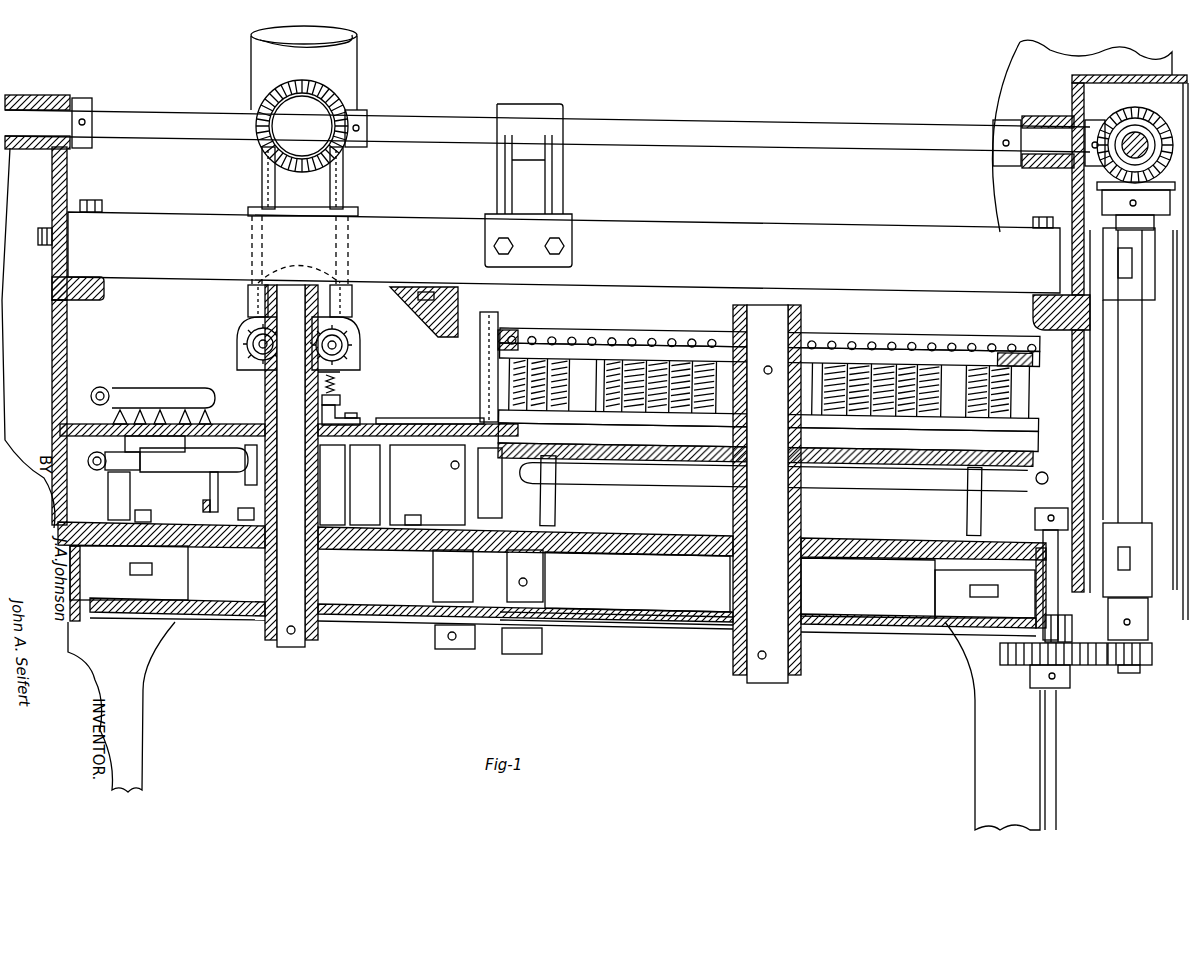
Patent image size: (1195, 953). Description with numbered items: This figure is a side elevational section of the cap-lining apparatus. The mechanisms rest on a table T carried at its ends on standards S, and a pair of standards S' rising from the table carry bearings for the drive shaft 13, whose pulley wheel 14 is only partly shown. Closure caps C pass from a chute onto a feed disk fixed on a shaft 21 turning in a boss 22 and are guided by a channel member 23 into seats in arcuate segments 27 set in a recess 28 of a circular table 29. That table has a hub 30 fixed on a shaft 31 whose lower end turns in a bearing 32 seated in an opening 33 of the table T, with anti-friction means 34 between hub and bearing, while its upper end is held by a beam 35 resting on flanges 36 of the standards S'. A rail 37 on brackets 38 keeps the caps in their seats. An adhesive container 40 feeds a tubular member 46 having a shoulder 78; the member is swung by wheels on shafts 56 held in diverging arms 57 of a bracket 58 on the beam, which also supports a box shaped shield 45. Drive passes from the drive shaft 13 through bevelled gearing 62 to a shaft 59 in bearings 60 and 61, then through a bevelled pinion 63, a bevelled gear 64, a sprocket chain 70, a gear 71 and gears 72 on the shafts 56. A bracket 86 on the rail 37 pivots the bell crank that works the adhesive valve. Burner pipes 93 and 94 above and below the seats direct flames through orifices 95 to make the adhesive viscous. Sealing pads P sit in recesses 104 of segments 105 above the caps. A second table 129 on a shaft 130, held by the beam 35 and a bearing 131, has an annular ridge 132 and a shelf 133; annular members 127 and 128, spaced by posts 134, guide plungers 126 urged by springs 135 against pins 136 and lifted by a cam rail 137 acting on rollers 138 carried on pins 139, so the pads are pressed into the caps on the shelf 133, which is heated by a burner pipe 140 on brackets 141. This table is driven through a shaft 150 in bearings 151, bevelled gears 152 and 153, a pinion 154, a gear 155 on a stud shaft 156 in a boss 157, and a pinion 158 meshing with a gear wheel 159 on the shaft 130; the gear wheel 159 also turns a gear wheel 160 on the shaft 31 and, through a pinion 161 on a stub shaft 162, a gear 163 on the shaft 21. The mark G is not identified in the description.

The drive shaft 13 is at (1070, 180).
The pulley wheel 14 is at (1000, 74).
The shaft 21 is at (450, 652).
The boss 22 is at (440, 572).
The channel member 23 is at (410, 418).
The arcuate segments 27 is at (185, 423).
The recess 28 is at (405, 446).
The circular table 29 is at (224, 423).
The hub 30 is at (268, 400).
The shaft 31 is at (294, 648).
The bearing 32 is at (318, 573).
The opening 33 is at (265, 548).
The anti-friction means 34 is at (255, 478).
The beam 35 is at (158, 225).
The flanges 36 is at (100, 290).
The rail 37 is at (92, 468).
The brackets 38 is at (110, 488).
The container 40 is at (358, 66).
The shield 45 is at (248, 305).
The tubular member 46 is at (332, 378).
The shafts 56 is at (258, 355).
The diverging arms 57 is at (250, 322).
The bracket 58 is at (297, 183).
The shaft 59 is at (620, 128).
The bearings 60 is at (55, 100).
The bearing 61 is at (520, 110).
The bevelled gearing 62 is at (1110, 122).
The bevelled pinion 63 is at (362, 112).
The bevelled gear 64 is at (262, 100).
The sprocket chain 70 is at (336, 182).
The gear 71 is at (250, 295).
The gears 72 is at (247, 345).
The shoulder 78 is at (340, 397).
The bracket 86 is at (340, 402).
The pipe 93 is at (125, 388).
The pipe 94 is at (175, 468).
The orifices 95 is at (140, 408).
The arcuate recesses 104 is at (103, 388).
The arcuate segments 105 is at (265, 425).
The pressure applying plungers 126 is at (500, 372).
The annular member 127 is at (620, 350).
The annular member 128 is at (608, 420).
The table 129 is at (918, 485).
The shaft 130 is at (772, 675).
The bearing 131 is at (803, 578).
The annular ridge 132 is at (545, 435).
The annular shelf 133 is at (492, 470).
The posts 134 is at (583, 360).
The springs 135 is at (500, 360).
The pins 136 is at (500, 386).
The cam rail 137 is at (440, 320).
The rollers 138 is at (485, 320).
The pins 139 is at (515, 328).
The perforated burner pipe 140 is at (620, 478).
The brackets 141 is at (558, 498).
The shaft 150 is at (1130, 428).
The bearings 151 is at (1155, 290).
The bevelled gear 152 is at (1110, 190).
The bevelled gear 153 is at (1158, 112).
The pinion 154 is at (1118, 668).
The gear 155 is at (1092, 667).
The stud shaft 156 is at (1043, 540).
The boss 157 is at (1036, 598).
The pinion 158 is at (1072, 622).
The gear wheel 159 is at (872, 638).
The gear wheel 160 is at (385, 627).
The pinion 161 is at (552, 632).
The stub shaft 162 is at (523, 656).
The gear 163 is at (428, 632).
The closure caps C is at (75, 420).
The guide G is at (482, 450).
The sealing pads P is at (490, 445).
The standards S is at (576, 726).
The standards S' is at (581, 446).
The table T is at (628, 558).